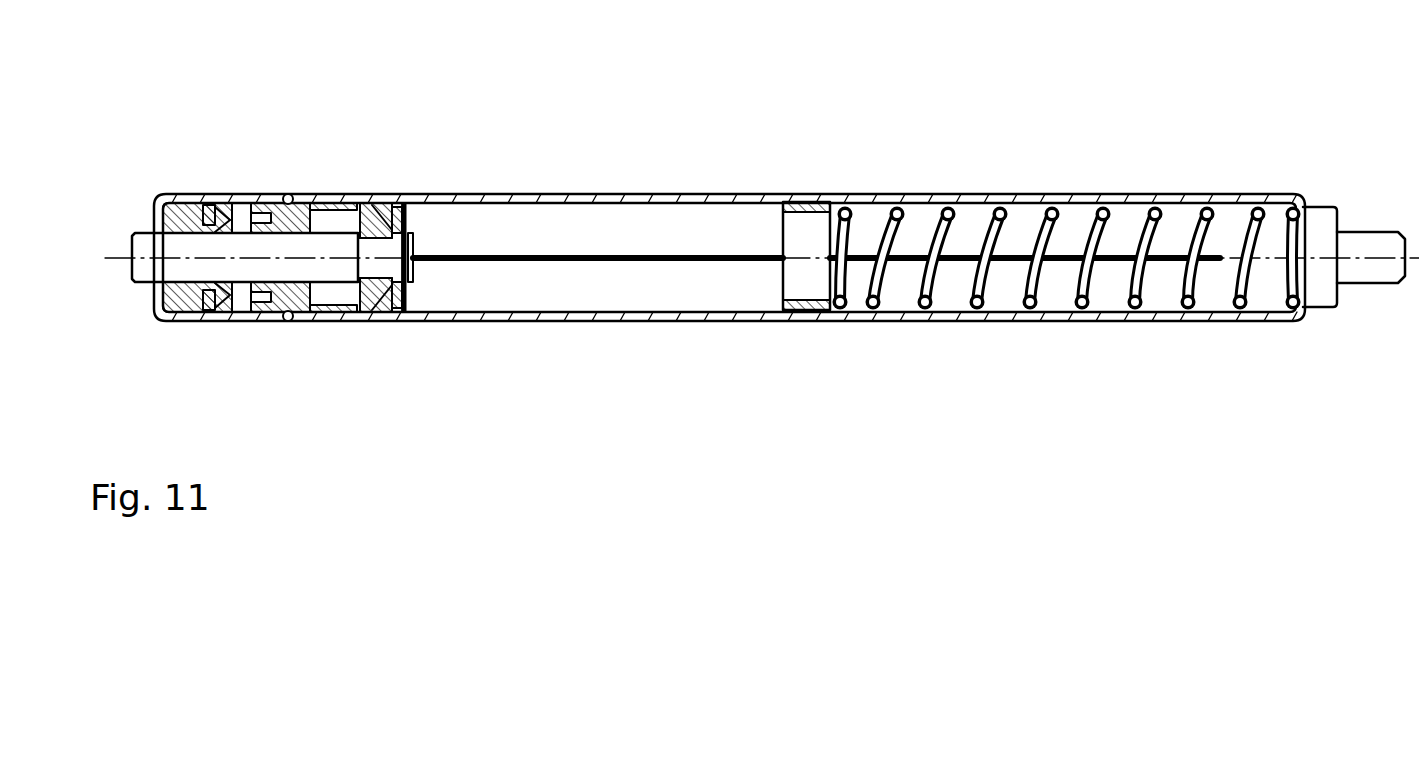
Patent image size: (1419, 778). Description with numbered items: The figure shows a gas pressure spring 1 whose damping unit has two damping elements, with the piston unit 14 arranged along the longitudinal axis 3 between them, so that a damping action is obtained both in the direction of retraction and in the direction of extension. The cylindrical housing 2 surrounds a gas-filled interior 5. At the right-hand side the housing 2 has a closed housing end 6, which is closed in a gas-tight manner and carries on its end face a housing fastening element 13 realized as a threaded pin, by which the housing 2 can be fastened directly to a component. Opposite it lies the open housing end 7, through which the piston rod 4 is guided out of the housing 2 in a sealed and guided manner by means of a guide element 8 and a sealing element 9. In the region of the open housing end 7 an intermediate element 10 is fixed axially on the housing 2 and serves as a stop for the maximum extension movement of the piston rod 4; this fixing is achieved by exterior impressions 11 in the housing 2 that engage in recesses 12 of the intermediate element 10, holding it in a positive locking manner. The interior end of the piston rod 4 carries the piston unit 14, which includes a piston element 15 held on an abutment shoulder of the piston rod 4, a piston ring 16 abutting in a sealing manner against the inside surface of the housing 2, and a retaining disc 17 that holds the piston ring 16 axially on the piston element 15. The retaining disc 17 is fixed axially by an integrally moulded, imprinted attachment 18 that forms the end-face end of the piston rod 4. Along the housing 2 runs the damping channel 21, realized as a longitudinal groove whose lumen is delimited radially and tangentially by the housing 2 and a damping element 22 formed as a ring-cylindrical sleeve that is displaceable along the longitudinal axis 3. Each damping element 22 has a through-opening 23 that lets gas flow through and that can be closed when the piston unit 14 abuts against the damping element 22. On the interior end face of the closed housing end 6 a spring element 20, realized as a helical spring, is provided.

The gas pressure spring 1 is at (623, 150).
The housing 2 is at (248, 314).
The longitudinal axis 3 is at (176, 252).
The piston rod 4 is at (190, 292).
The interior 5 is at (637, 305).
The closed housing end 6 is at (1358, 197).
The open housing end 7 is at (131, 177).
The guide element 8 is at (207, 212).
The sealing element 9 is at (227, 218).
The intermediate element 10 is at (300, 215).
The exterior impression 11 is at (288, 318).
The recess 12 is at (291, 199).
The housing fastening element 13 is at (1385, 270).
The piston unit 14 is at (416, 217).
The piston element 15 is at (372, 312).
The piston ring 16 is at (400, 312).
The retaining disc 17 is at (405, 225).
The attachment 18 is at (414, 283).
The spring element 20 is at (925, 318).
The damping channel 21 is at (602, 266).
The damping element 22 is at (343, 311).
The through-opening 23 is at (812, 222).